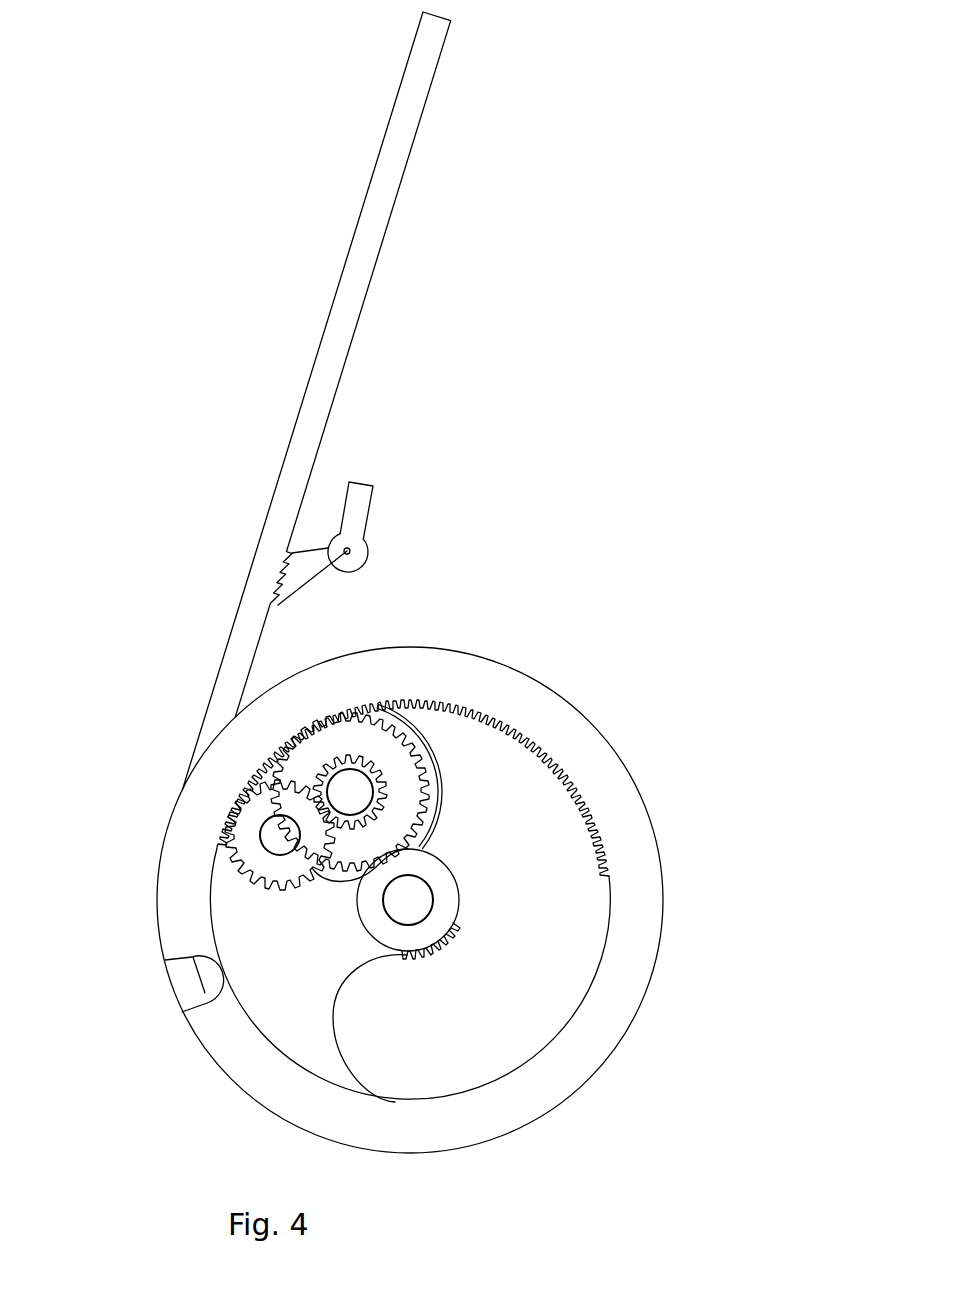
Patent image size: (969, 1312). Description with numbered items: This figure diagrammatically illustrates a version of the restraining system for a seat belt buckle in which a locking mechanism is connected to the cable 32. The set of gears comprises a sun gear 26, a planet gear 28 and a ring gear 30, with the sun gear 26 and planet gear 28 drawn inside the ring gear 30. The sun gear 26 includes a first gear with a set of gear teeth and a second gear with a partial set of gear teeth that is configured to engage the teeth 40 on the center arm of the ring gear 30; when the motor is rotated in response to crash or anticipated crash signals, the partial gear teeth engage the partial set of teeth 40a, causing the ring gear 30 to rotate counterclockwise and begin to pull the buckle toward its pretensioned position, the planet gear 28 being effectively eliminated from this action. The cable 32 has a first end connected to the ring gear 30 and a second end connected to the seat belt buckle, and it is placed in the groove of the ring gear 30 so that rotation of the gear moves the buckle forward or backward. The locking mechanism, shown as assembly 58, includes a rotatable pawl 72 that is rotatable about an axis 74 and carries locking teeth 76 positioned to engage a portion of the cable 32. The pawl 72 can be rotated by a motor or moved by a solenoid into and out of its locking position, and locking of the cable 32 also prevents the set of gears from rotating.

The sun gear 26 is at (387, 758).
The planet gear 28 is at (240, 823).
The ring gear 30 is at (172, 887).
The cable 32 is at (427, 72).
The teeth on the center arm of the ring gear 40 is at (430, 953).
The partial set of teeth 40a is at (452, 894).
The pawl assembly 58 is at (381, 553).
The rotatable pawl 72 is at (365, 523).
The axis 74 is at (347, 552).
The locking teeth 76 is at (292, 567).